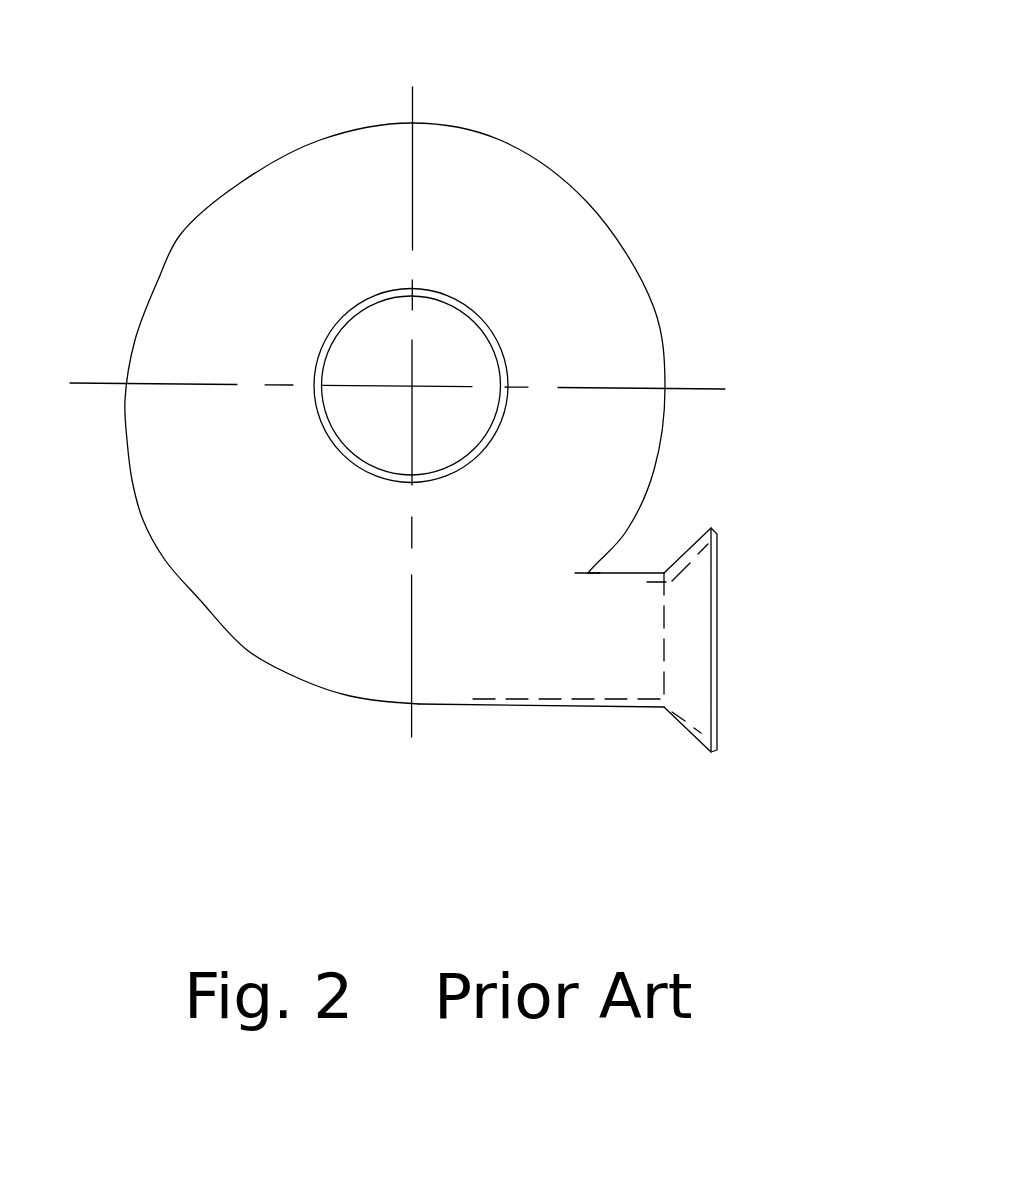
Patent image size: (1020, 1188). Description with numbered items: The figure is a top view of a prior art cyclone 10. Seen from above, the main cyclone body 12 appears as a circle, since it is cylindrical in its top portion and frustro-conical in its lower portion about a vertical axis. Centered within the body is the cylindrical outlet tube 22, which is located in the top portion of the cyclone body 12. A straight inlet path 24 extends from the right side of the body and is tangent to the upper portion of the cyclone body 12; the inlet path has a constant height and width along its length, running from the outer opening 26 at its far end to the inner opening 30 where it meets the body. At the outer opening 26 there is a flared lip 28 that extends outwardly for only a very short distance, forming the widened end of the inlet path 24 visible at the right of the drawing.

The cyclone 10 is at (210, 153).
The main cyclone body 12 is at (654, 308).
The cylindrical outlet tube 22 is at (462, 302).
The straight inlet path 24 is at (613, 638).
The outer opening 26 is at (665, 648).
The flared lip 28 is at (717, 587).
The inner opening 30 is at (588, 573).